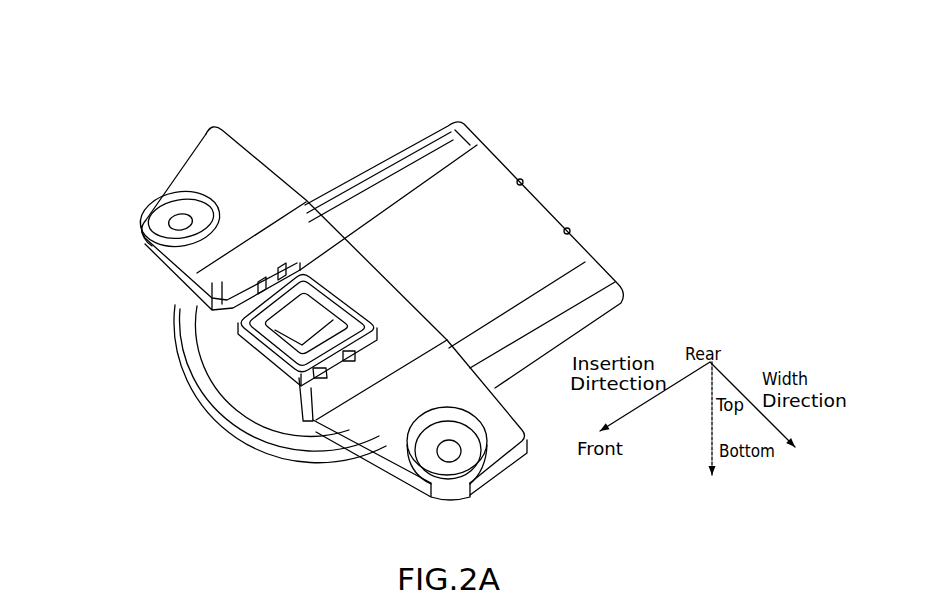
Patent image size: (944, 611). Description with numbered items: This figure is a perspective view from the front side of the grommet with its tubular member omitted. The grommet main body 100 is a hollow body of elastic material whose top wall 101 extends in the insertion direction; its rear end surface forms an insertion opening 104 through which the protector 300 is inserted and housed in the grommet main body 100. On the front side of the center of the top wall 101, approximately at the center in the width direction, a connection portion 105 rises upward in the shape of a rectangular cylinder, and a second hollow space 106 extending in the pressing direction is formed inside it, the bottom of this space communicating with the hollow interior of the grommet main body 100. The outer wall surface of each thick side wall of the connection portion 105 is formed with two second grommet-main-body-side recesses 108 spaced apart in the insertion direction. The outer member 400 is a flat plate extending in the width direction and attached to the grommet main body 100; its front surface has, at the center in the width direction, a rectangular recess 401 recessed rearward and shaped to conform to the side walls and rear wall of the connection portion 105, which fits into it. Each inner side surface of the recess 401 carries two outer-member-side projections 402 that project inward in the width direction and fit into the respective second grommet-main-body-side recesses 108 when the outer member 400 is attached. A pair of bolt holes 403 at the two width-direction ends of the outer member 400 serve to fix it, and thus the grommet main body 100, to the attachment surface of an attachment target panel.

The grommet main body 100 is at (425, 106).
The top wall 101 is at (407, 177).
The insertion opening 104 is at (535, 198).
The connection portion 105 is at (242, 367).
The second hollow space 106 is at (262, 330).
The second grommet-main-body-side recesses 108 is at (360, 335).
The protector 300 is at (581, 225).
The outer member 400 is at (175, 100).
The recess 401 is at (303, 262).
The outer-member-side projections 402 is at (276, 256).
The bolt holes 403 is at (168, 220).